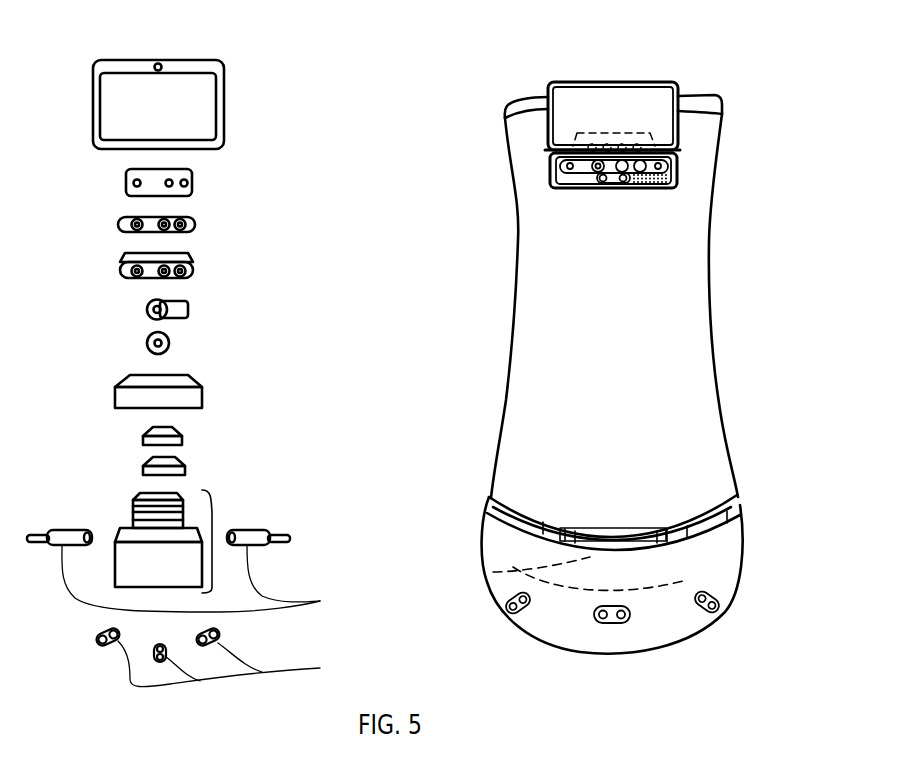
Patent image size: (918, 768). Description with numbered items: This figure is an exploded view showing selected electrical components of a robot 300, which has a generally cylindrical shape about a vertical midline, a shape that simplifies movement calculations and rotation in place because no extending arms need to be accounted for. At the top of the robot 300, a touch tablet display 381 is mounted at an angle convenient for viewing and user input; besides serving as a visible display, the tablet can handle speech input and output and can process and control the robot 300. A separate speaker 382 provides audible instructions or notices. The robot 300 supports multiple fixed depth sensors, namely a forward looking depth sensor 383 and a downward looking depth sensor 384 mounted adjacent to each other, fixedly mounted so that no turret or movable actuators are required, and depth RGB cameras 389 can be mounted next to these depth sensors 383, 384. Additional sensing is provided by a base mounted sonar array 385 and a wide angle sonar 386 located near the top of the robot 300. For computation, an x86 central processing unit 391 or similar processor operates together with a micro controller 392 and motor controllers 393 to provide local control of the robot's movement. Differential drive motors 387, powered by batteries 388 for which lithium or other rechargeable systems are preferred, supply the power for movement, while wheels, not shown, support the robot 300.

The robot 300 is at (743, 93).
The touch tablet display 381 is at (572, 122).
The depth RGB cameras 389 is at (570, 172).
The forward looking depth sensor 383 is at (572, 172).
The downward looking depth sensor 384 is at (593, 190).
The speaker 382 is at (660, 190).
The wide angle sonar 386 is at (612, 190).
The x86 central processing unit 391 is at (613, 507).
The micro controller 392 is at (590, 525).
The motor controllers 393 is at (590, 557).
The batteries 388 is at (590, 558).
The differential drive motors 387 is at (493, 572).
The base mounted sonar array 385 is at (707, 613).